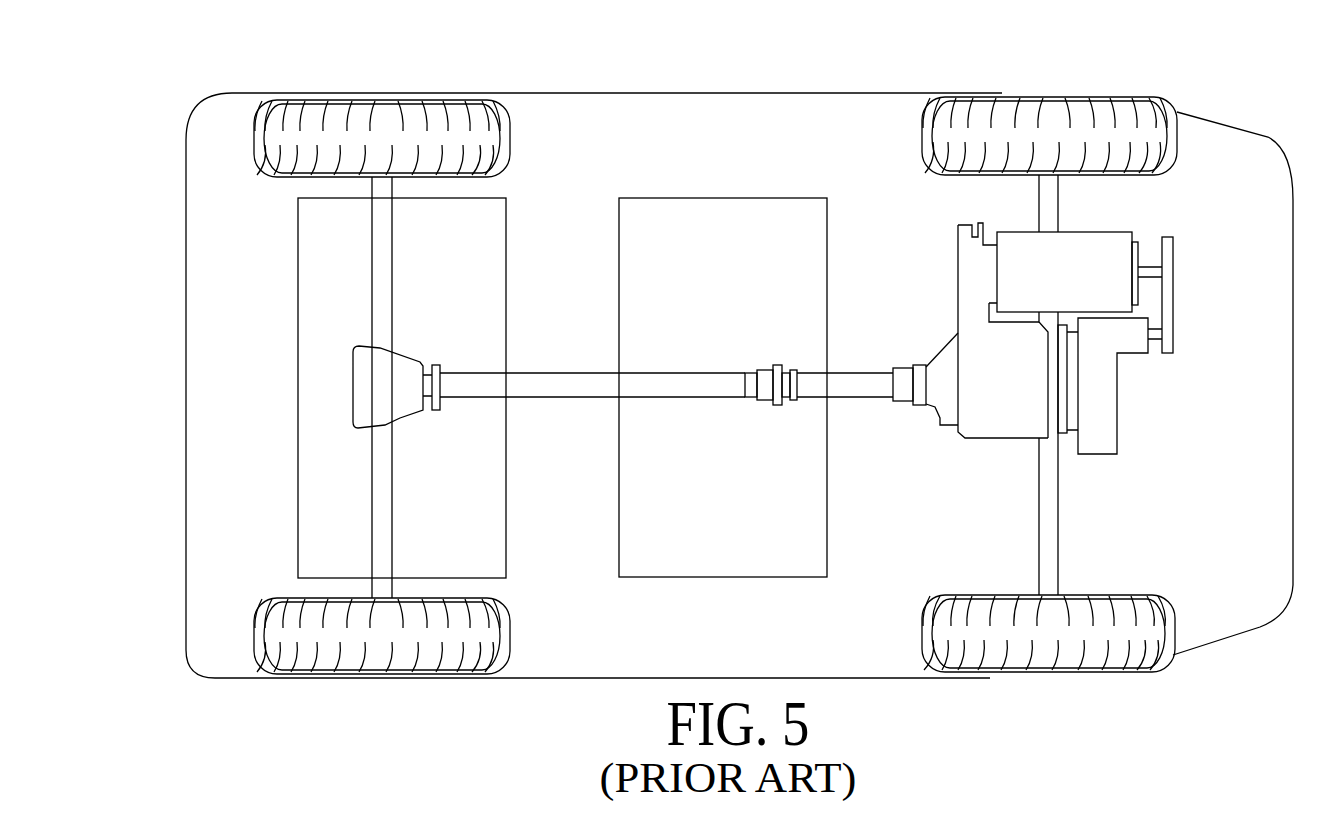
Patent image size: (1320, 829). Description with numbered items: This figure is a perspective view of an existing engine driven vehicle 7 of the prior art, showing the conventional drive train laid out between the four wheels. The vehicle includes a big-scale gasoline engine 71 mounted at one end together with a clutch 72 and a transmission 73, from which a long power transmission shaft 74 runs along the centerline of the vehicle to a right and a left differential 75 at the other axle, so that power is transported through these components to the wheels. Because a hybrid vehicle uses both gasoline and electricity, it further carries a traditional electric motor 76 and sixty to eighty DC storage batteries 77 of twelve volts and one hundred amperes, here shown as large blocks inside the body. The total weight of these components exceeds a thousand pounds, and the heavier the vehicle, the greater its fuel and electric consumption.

The engine driven vehicle 7 is at (568, 133).
The gasoline engine 71 is at (1027, 418).
The clutch 72 is at (910, 366).
The transmission 73 is at (933, 406).
The power transmission shaft 74 is at (687, 387).
The differential 75 is at (377, 401).
The electric motor 76 is at (1110, 243).
The DC storage batteries 77 is at (713, 212).